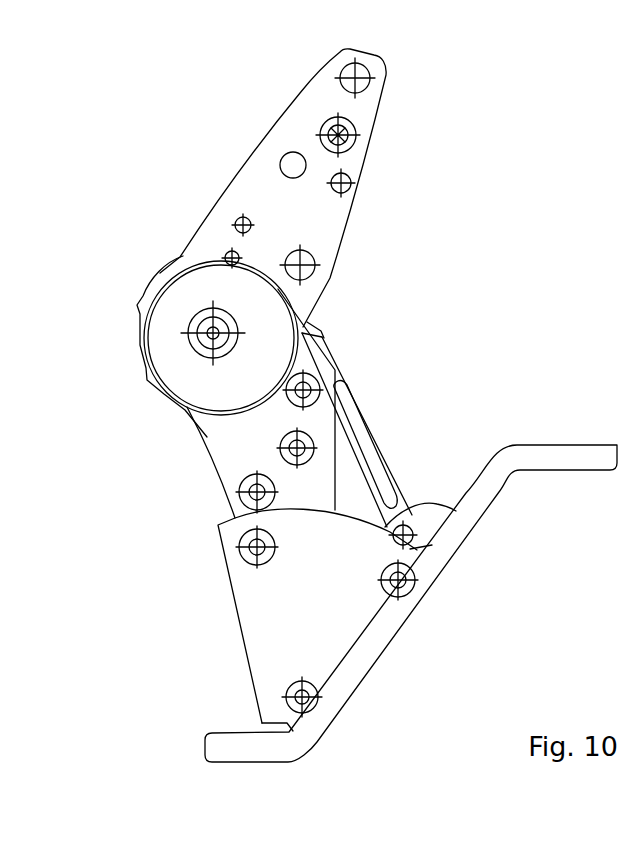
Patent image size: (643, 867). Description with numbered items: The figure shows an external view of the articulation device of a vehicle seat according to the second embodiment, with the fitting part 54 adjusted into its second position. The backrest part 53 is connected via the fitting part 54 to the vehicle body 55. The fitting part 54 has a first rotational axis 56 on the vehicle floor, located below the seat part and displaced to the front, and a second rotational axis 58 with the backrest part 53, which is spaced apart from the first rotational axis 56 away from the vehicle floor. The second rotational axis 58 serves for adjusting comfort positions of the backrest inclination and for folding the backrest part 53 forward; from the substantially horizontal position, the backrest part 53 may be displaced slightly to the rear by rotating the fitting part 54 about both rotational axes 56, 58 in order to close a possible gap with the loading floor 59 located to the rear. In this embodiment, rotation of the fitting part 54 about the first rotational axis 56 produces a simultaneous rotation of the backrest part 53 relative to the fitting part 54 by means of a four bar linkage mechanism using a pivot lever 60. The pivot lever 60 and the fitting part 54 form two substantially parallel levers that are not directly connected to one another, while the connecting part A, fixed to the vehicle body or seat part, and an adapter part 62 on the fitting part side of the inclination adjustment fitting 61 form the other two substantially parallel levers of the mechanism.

The backrest part 53 is at (247, 202).
The fitting part 54 is at (230, 448).
The vehicle body 55 is at (397, 613).
The first rotational axis 56 is at (282, 689).
The second rotational axis 58 is at (193, 353).
The loading floor 59 is at (562, 441).
The pivot lever 60 is at (365, 433).
The inclination adjustment fitting 61 is at (127, 264).
The adapter part 62 is at (313, 333).
The connecting part A is at (263, 617).